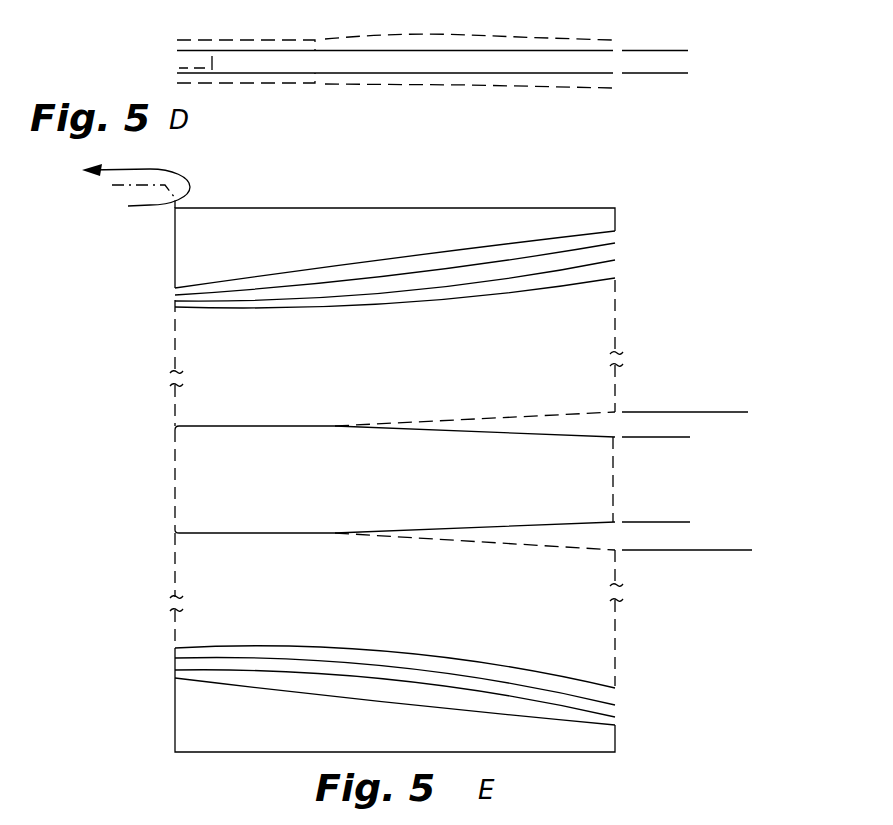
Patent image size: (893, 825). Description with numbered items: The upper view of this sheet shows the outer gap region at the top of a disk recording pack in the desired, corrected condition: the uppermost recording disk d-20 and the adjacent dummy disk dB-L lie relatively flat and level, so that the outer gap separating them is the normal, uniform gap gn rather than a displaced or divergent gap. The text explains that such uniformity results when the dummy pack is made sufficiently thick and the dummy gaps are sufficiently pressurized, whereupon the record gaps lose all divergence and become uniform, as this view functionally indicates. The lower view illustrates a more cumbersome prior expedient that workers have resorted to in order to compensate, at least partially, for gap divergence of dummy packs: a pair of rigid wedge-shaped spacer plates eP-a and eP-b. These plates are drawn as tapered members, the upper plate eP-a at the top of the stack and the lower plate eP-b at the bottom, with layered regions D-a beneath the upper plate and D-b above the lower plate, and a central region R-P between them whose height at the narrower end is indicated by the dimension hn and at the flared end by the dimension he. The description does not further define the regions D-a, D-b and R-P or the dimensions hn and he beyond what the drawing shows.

In FIG. 5D, the dummy disk dB-L is at (315, 40).
In FIG. 5D, the uppermost recording disk d-20 is at (315, 83).
In FIG. 5D, the normal uniform gap gn is at (679, 12).
In FIG. 5E, the wedge-shaped spacer plate eP-a is at (375, 253).
In FIG. 5E, the upper dielectric layers D-a is at (452, 339).
In FIG. 5E, the resonant plate / core region R-P is at (405, 489).
In FIG. 5E, the lower dielectric layers D-b is at (452, 639).
In FIG. 5E, the wedge-shaped spacer plate eP-b is at (360, 736).
In FIG. 5E, the core height at neck hn is at (684, 519).
In FIG. 5E, the core height at flared end he is at (743, 415).